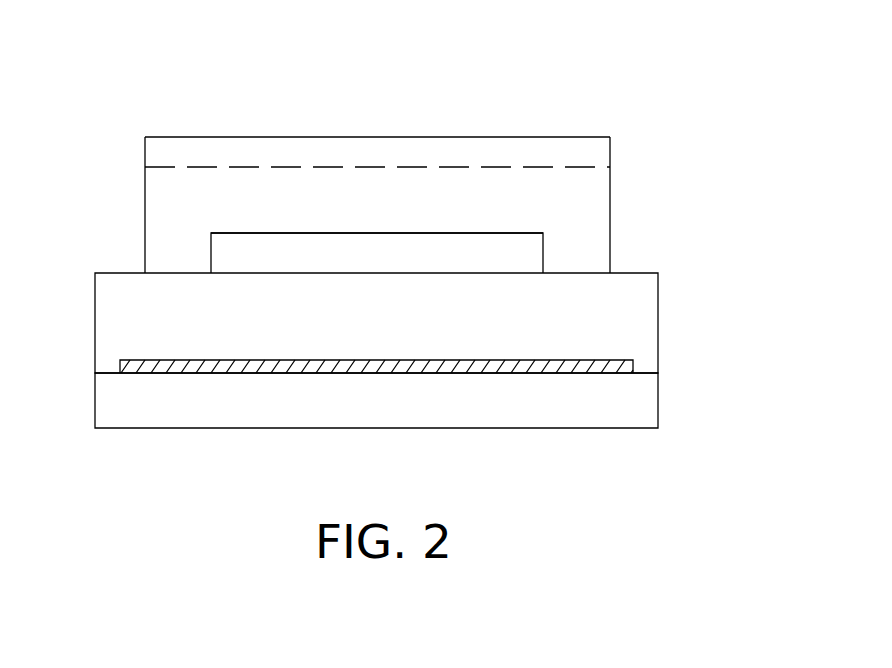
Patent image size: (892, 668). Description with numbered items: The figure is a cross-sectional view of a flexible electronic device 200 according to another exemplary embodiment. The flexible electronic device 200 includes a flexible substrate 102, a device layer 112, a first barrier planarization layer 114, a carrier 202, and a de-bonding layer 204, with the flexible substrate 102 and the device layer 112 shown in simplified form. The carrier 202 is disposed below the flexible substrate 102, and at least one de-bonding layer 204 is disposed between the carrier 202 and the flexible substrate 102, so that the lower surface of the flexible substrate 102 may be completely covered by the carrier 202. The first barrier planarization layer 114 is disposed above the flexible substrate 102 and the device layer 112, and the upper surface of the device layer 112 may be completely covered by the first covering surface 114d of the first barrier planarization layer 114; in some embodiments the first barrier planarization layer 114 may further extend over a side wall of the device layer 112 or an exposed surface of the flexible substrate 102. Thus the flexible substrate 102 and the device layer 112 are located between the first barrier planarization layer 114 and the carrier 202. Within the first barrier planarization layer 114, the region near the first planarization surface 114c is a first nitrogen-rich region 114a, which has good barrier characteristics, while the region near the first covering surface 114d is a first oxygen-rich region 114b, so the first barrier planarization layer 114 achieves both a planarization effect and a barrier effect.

The flexible electronic device 200 is at (123, 74).
The flexible substrate 102 is at (632, 320).
The carrier 202 is at (643, 397).
The de-bonding layer 204 is at (628, 368).
The device layer 112 is at (530, 252).
The first barrier planarization layer 114 is at (455, 176).
The first nitrogen-rich region 114a is at (582, 148).
The first oxygen-rich region 114b is at (582, 192).
The first planarization surface 114c is at (576, 136).
The first covering surface 114d is at (516, 221).